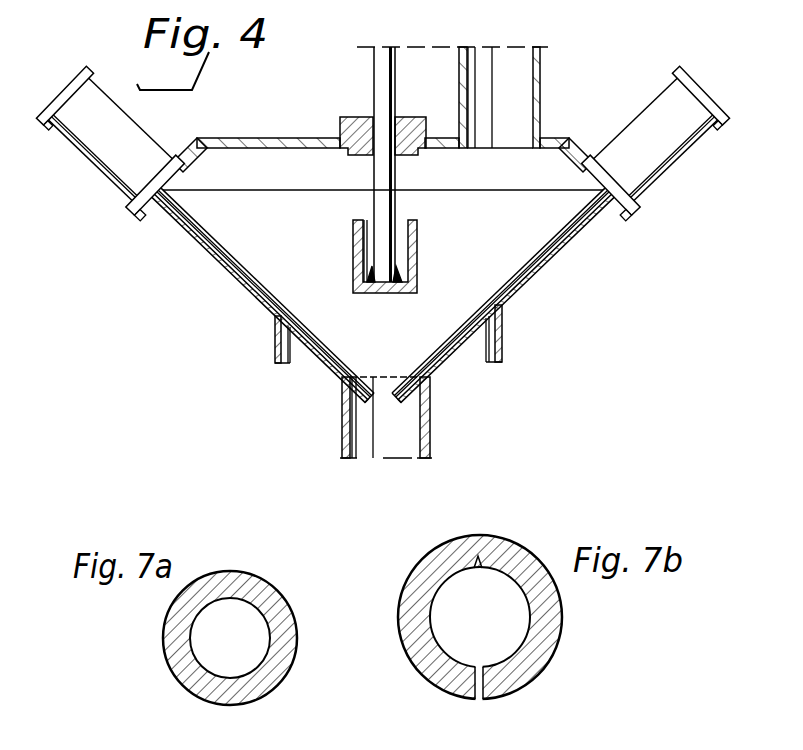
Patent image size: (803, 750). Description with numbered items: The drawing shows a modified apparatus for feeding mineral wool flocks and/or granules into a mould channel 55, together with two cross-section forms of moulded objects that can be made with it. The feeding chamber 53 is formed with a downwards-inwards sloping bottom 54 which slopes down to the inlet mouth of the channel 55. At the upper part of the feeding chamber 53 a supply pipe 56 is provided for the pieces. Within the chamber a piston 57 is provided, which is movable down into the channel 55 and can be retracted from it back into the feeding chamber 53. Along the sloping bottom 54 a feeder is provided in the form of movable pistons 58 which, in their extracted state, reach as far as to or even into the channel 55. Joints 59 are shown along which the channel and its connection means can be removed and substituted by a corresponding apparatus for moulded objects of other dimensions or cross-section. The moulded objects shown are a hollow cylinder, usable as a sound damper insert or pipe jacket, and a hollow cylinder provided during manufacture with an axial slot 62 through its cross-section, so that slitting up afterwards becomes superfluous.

In FIG. 4, the feeding chamber 53 is at (316, 229).
In FIG. 4, the sloping bottom 54 is at (264, 302).
In FIG. 4, the channel 55 is at (413, 423).
In FIG. 4, the supply pipe 56 is at (524, 96).
In FIG. 4, the piston 57 is at (414, 252).
In FIG. 4, the movable pistons 58 is at (234, 264).
In FIG. 4, the joints 59 is at (283, 364).
In FIG. 7B, the axial slot 62 is at (478, 699).